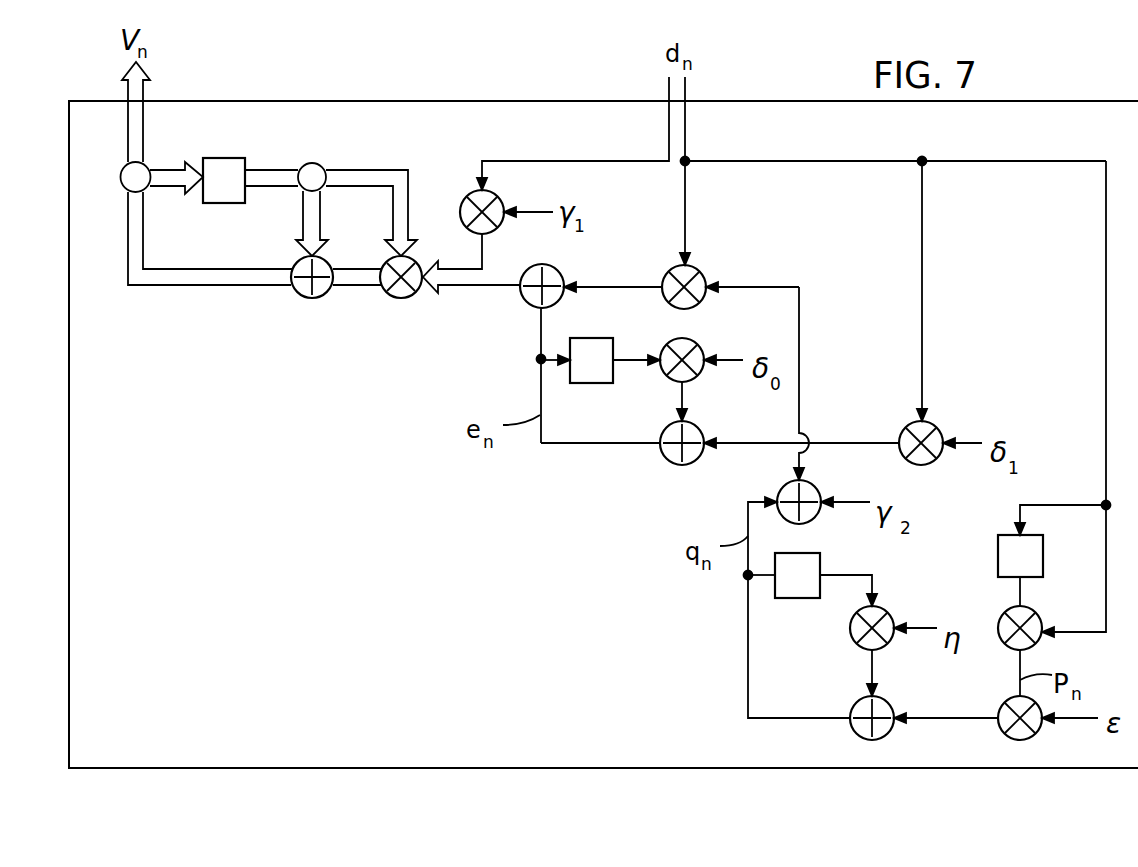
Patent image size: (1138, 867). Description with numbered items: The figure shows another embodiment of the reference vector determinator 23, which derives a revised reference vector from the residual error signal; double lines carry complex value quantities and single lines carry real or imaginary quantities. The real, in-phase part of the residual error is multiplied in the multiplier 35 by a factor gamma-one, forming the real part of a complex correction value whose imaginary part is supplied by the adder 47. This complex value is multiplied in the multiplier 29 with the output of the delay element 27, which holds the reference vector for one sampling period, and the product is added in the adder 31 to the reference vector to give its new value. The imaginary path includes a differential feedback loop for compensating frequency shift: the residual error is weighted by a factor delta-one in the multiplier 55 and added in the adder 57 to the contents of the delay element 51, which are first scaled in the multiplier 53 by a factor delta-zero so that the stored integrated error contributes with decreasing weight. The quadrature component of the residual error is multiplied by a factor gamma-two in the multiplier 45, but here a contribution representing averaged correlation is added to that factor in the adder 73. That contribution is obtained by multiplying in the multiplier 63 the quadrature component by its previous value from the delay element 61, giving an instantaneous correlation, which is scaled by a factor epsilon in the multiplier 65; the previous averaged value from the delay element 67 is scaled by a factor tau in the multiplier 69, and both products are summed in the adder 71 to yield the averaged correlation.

The reference vector determinator 23 is at (402, 112).
The delay element 27 is at (222, 158).
The multiplier 29 is at (392, 296).
The adder 31 is at (296, 263).
The multiplier 35 is at (472, 196).
The multiplier 45 is at (697, 273).
The adder 47 is at (528, 300).
The delay element 51 is at (590, 338).
The multiplier 53 is at (692, 345).
The multiplier 55 is at (904, 430).
The adder 57 is at (668, 428).
The delay element 61 is at (1004, 540).
The multiplier 63 is at (1036, 615).
The multiplier 65 is at (1006, 702).
The delay element 67 is at (818, 565).
The multiplier 69 is at (858, 635).
The adder 71 is at (884, 702).
The adder 73 is at (786, 488).